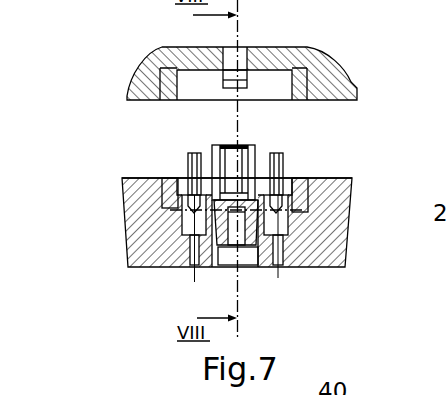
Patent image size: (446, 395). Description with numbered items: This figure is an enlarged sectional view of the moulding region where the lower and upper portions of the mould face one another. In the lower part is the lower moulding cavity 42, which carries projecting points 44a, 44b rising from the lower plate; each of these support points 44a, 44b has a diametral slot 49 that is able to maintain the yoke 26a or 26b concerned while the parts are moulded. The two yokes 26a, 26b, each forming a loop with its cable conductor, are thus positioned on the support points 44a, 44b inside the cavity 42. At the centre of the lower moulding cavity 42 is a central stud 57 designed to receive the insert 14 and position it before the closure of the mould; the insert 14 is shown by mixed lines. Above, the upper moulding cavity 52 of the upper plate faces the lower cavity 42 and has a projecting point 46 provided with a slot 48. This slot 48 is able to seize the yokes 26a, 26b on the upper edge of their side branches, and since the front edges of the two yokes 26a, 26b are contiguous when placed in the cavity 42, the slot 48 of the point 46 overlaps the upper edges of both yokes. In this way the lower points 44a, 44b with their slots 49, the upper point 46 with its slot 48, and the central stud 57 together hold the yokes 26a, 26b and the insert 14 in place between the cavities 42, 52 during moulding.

The insert 14 is at (283, 145).
The yoke 26a is at (187, 160).
The yoke 26b is at (257, 152).
The lower moulding cavity 42 is at (258, 148).
The projecting point 44a is at (180, 218).
The projecting point 44b is at (278, 228).
The projecting point 46 is at (293, 72).
The slot 48 is at (228, 88).
The diametral slot 49 is at (270, 196).
The upper moulding cavity 52 is at (275, 85).
The central stud 57 is at (228, 165).